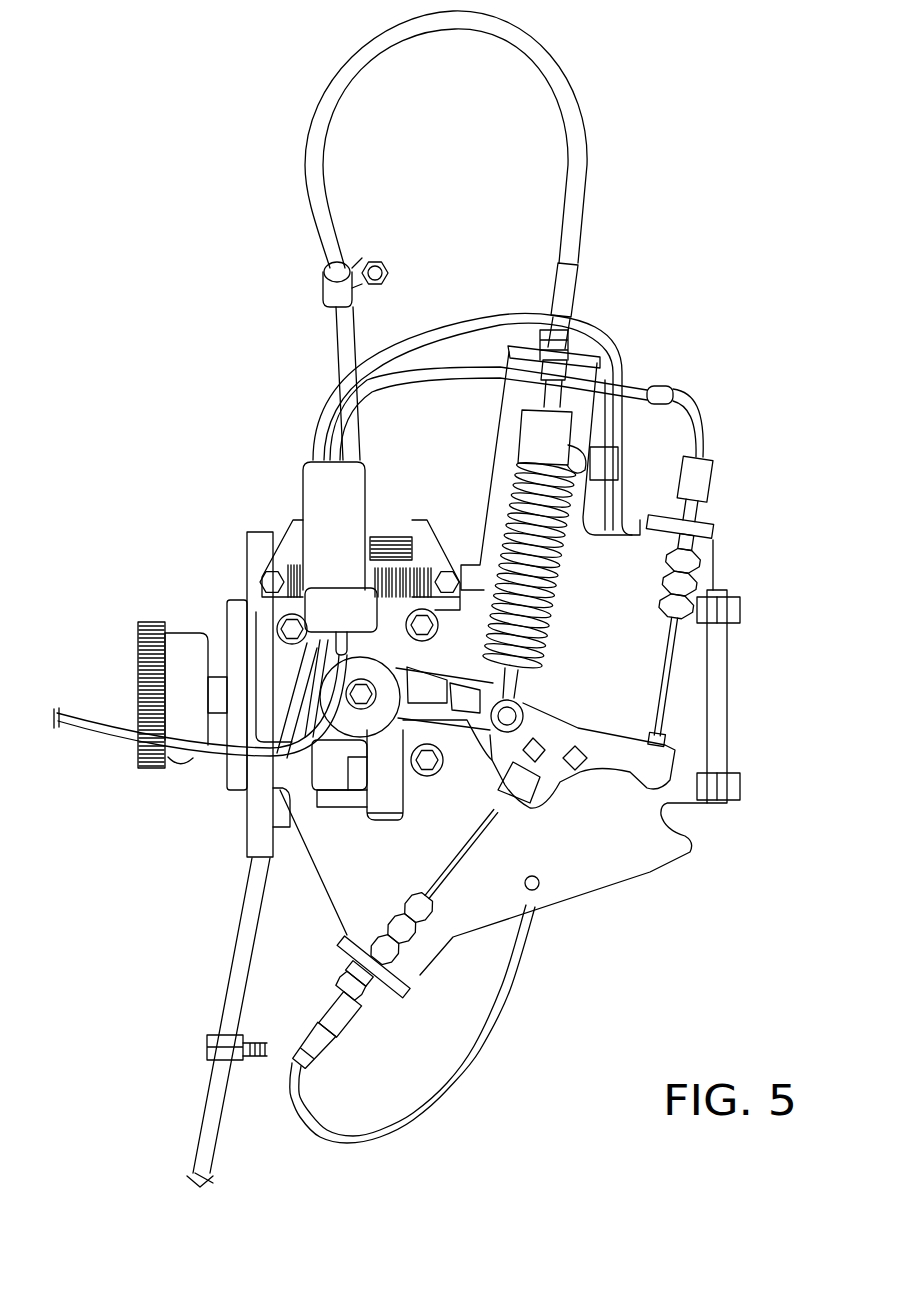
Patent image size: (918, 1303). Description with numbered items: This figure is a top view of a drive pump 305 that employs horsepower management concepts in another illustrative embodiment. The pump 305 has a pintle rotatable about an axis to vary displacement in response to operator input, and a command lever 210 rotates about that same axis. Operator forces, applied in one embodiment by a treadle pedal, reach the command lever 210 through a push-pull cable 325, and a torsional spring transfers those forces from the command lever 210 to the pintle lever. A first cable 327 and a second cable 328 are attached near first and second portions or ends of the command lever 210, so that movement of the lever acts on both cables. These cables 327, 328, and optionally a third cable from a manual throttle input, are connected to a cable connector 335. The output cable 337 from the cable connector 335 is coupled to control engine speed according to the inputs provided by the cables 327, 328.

The command lever 210 is at (622, 757).
The pump 305 is at (647, 903).
The push-pull cable 325 is at (573, 120).
The first cable 327 is at (628, 390).
The second cable 328 is at (463, 1057).
The cable connector 335 is at (325, 510).
The output cable 337 is at (87, 730).